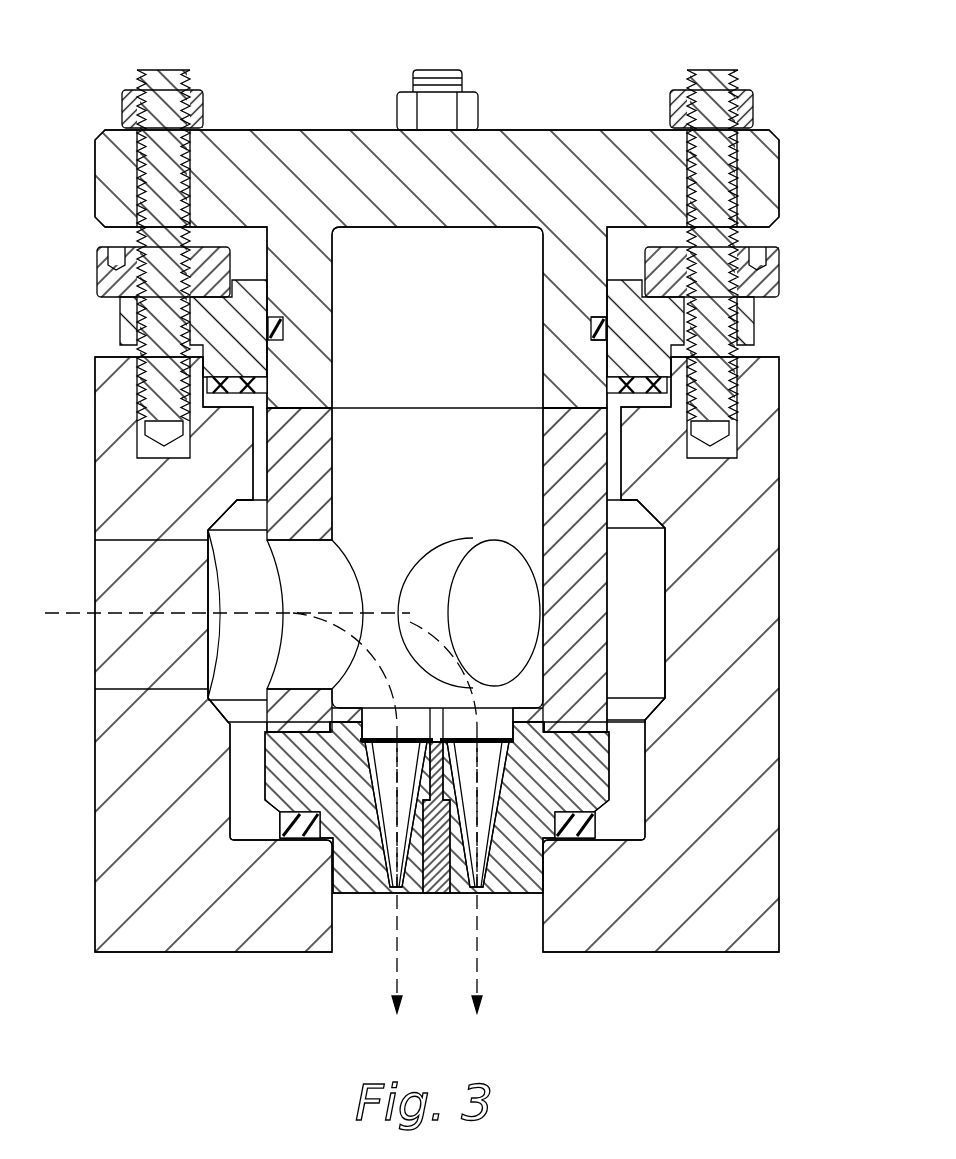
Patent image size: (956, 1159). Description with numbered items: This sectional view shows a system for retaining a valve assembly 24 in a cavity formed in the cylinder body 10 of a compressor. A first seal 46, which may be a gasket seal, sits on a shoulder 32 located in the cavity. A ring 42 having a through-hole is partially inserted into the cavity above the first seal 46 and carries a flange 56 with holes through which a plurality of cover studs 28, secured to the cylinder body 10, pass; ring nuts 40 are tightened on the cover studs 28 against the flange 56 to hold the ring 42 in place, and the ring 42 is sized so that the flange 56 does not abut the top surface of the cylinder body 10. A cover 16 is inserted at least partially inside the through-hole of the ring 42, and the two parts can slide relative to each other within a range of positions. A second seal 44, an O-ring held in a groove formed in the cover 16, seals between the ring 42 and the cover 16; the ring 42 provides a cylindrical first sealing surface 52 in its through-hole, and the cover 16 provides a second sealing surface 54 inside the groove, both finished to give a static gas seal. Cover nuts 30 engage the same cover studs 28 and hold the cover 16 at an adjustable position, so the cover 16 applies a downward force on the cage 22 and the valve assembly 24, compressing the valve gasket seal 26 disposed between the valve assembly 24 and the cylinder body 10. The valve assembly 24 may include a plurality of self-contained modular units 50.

The cylinder body 10 is at (779, 590).
The cover 16 is at (779, 178).
The cage 22 is at (598, 598).
The valve assembly 24 is at (437, 886).
The valve gasket seal 26 is at (303, 826).
The cover studs 28 is at (153, 70).
The cover nuts 30 is at (122, 112).
The shoulder 32 is at (268, 380).
The ring nuts 40 is at (97, 265).
The ring 42 is at (755, 315).
The second seal 44 is at (284, 330).
The first seal 46 is at (608, 382).
The self-contained modular units 50 is at (378, 882).
The first sealing surface 52 is at (592, 330).
The second sealing surface 54 is at (597, 317).
The flange 56 is at (755, 338).